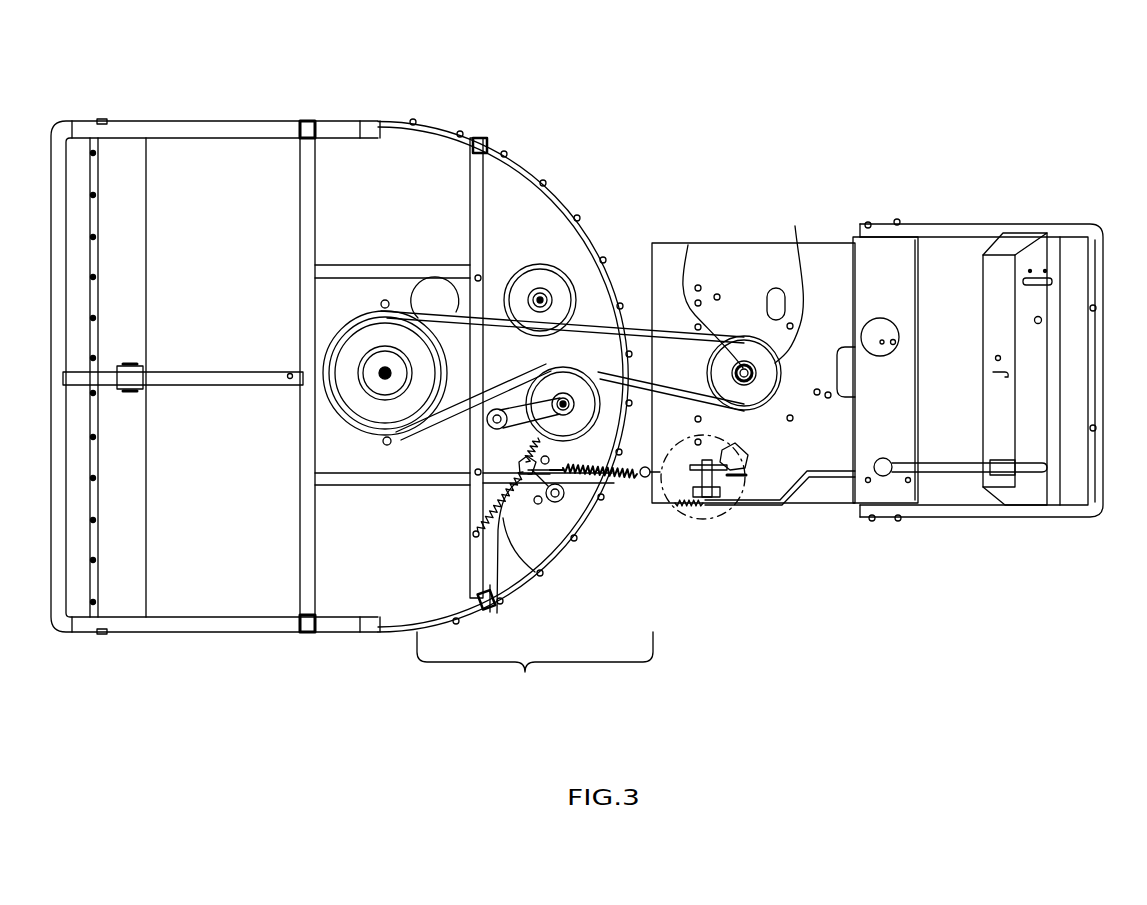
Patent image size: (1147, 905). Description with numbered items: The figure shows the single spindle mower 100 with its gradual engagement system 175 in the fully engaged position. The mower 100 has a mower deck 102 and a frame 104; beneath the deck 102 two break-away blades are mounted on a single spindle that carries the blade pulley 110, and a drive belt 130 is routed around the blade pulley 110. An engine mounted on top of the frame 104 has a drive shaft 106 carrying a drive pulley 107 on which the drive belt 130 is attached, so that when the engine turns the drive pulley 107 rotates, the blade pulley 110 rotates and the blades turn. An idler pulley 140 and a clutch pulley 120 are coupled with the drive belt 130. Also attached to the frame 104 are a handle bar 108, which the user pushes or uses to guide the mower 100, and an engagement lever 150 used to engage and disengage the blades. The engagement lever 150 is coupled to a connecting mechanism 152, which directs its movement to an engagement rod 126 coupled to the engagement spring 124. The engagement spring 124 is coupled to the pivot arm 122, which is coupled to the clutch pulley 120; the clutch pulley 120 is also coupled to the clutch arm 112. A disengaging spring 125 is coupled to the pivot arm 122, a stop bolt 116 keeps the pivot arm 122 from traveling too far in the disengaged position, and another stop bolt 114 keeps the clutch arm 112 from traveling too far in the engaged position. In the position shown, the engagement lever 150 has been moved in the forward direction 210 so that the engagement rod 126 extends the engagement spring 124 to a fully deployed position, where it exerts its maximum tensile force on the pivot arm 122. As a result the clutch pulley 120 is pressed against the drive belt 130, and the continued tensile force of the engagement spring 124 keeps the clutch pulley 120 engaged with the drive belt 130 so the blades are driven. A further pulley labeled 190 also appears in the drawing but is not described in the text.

The single spindle mower 100 is at (699, 86).
The mower deck 102 is at (252, 147).
The frame 104 is at (722, 254).
The drive shaft 106 is at (688, 245).
The drive pulley 107 is at (796, 240).
The handle bar 108 is at (1098, 292).
The blade pulley 110 is at (347, 393).
The clutch arm 112 is at (547, 405).
The stop bolt 114 is at (537, 443).
The stop bolt 116 is at (550, 502).
The clutch pulley 120 is at (532, 420).
The pivot arm 122 is at (532, 573).
The engagement spring 124 is at (571, 478).
The disengaging spring 125 is at (500, 613).
The engagement rod 126 is at (635, 482).
The drive belt 130 is at (632, 333).
The idler pulley 140 is at (545, 278).
The engagement lever 150 is at (878, 480).
The connecting mechanism 152 is at (730, 514).
The gradual engagement system 175 is at (535, 669).
The idler pulley 190 is at (587, 424).
The forward direction 210 is at (1055, 540).